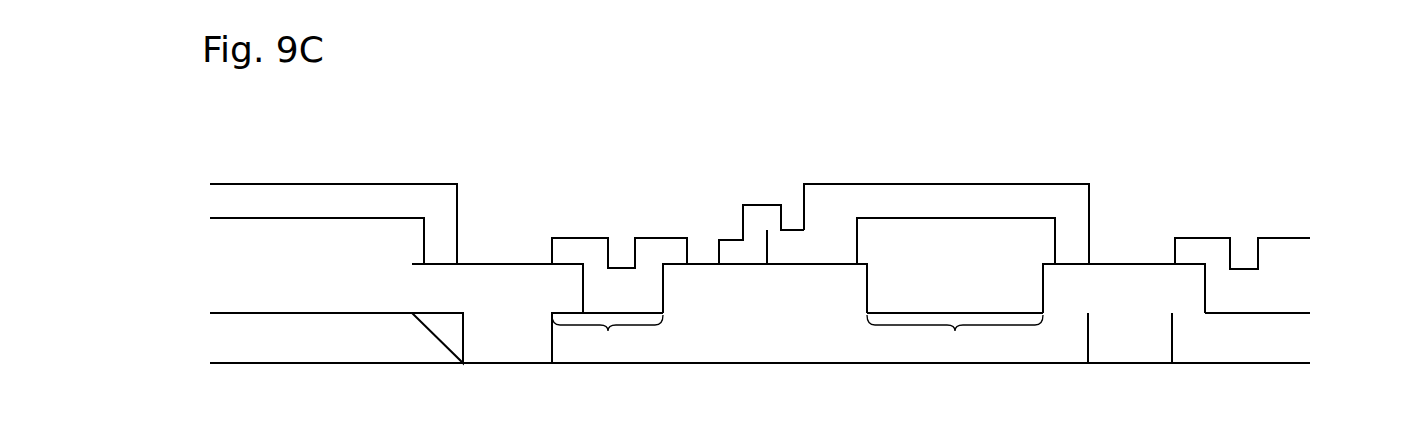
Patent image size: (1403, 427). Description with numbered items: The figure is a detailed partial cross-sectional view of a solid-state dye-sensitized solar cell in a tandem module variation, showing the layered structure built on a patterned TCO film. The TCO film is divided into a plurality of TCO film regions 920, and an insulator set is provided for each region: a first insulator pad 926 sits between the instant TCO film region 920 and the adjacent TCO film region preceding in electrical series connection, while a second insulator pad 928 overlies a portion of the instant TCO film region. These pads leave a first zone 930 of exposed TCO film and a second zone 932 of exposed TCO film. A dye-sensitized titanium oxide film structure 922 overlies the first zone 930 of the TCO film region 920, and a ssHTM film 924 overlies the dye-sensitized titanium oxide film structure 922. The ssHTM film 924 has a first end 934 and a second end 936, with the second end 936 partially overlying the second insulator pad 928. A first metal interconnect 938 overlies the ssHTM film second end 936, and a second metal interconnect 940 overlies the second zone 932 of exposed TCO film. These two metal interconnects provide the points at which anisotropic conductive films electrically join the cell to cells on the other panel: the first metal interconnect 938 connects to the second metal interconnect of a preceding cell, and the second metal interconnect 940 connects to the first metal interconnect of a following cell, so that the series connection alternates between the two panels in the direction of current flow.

The TCO film region 920 is at (314, 346).
The dye-sensitized titanium oxide film structure 922 is at (938, 266).
The ssHTM film 924 is at (938, 211).
The first insulator pad 926 is at (476, 298).
The second insulator pad 928 is at (728, 298).
The first zone of exposed TCO film 930 is at (955, 338).
The second zone of exposed TCO film 932 is at (607, 338).
The first end 934 is at (1100, 207).
The second end 936 is at (793, 194).
The first metal interconnect 938 is at (742, 223).
The second metal interconnect 940 is at (1220, 213).